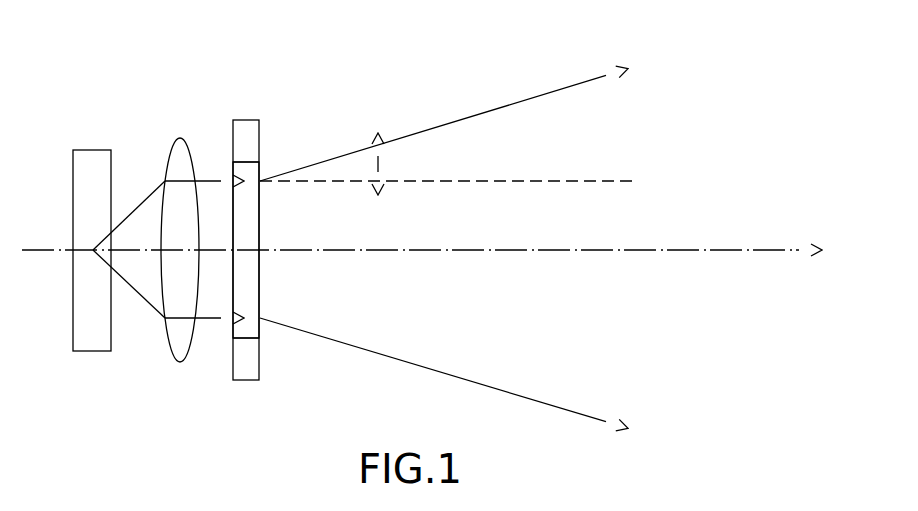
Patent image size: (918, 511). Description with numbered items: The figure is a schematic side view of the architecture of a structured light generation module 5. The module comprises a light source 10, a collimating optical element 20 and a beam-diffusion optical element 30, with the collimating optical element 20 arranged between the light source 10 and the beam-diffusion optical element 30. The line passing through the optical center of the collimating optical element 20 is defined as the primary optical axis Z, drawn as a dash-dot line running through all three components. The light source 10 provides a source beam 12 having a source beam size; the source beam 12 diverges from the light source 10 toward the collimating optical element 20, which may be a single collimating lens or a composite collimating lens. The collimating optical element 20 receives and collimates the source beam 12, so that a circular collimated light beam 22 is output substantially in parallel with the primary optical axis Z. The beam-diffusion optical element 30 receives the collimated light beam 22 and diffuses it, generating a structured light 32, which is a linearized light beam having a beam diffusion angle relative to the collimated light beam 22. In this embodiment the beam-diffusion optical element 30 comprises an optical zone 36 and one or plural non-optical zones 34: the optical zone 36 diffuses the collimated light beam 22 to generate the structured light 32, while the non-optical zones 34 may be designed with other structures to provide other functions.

The structured light generation module 5 is at (101, 40).
The light source 10 is at (83, 205).
The source beam 12 is at (147, 197).
The collimating optical element 20 is at (180, 148).
The collimated light beam 22 is at (217, 178).
The beam-diffusion optical element 30 is at (386, 27).
The structured light 32 is at (527, 102).
The non-optical zone 34 is at (247, 128).
The optical zone 36 is at (250, 237).
The primary optical axis Z is at (575, 247).